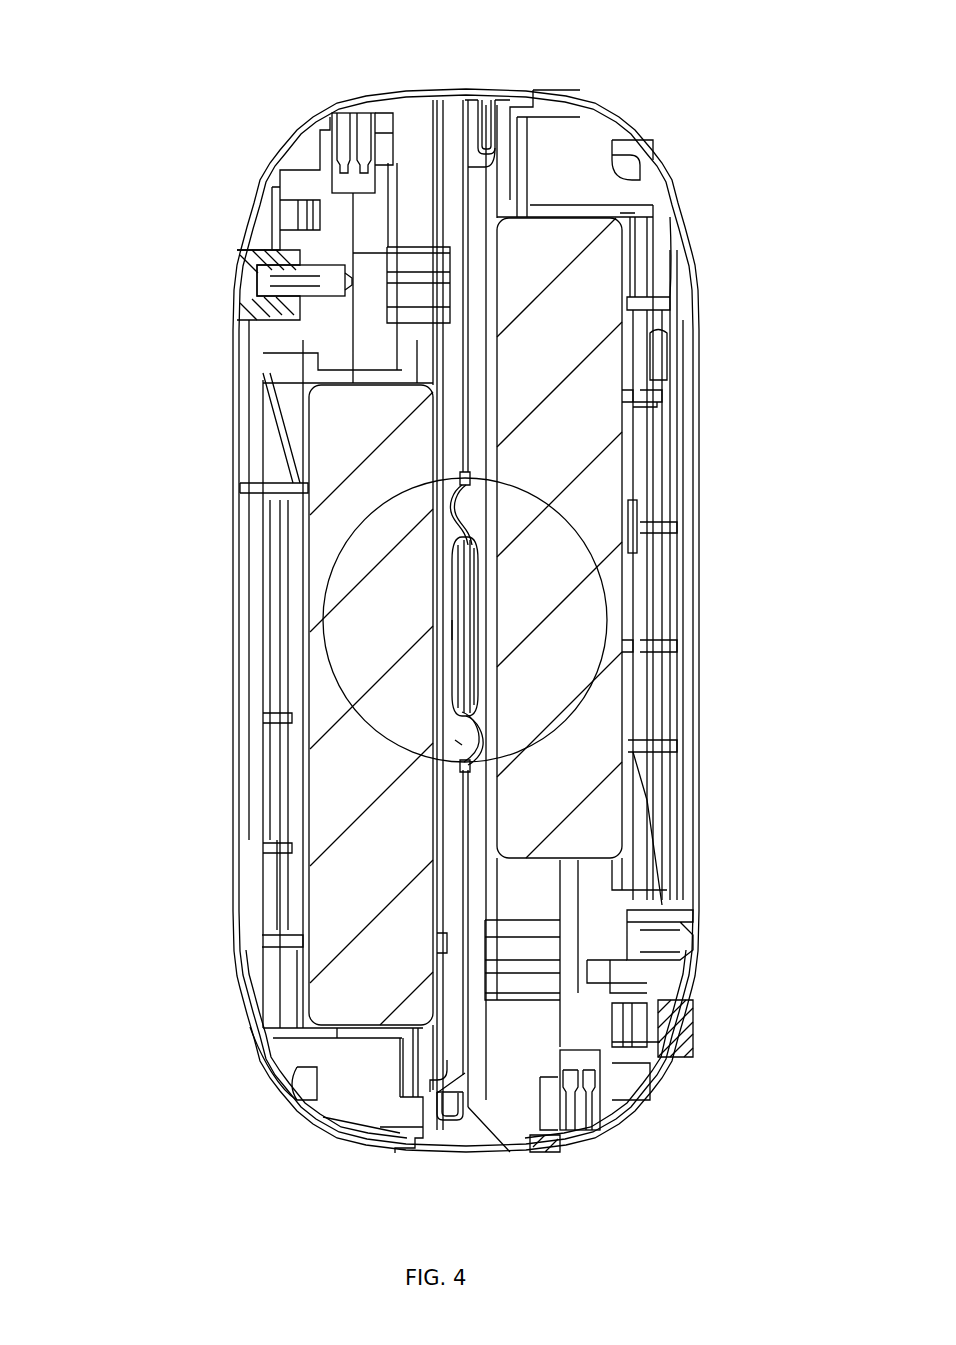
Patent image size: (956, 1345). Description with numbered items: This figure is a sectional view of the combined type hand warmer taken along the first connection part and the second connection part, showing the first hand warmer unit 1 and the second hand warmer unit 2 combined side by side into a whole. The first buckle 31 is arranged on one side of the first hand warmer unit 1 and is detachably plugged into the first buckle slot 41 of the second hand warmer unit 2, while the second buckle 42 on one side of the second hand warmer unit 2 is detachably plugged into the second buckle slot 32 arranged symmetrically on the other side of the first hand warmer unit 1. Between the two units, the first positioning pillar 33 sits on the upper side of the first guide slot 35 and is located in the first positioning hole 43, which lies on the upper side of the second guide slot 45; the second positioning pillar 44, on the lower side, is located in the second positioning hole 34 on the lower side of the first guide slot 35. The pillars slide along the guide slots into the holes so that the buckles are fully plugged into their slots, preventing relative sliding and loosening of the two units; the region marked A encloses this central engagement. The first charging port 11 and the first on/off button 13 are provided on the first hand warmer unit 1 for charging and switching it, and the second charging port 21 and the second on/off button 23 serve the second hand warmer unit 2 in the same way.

The first hand warmer unit 1 is at (709, 988).
The second hand warmer unit 2 is at (215, 1017).
The first charging port 11 is at (588, 1110).
The first on/off button 13 is at (665, 1028).
The second charging port 21 is at (337, 133).
The second on/off button 23 is at (245, 270).
The first buckle 31 is at (472, 137).
The second buckle slot 32 is at (444, 1107).
The first positioning pillar 33 is at (462, 508).
The second positioning hole 34 is at (483, 730).
The first guide slot 35 is at (477, 612).
The first buckle slot 41 is at (468, 104).
The second buckle 42 is at (458, 1107).
The first positioning hole 43 is at (447, 503).
The second positioning pillar 44 is at (463, 743).
The second guide slot 45 is at (455, 613).
The detail region A is at (382, 745).